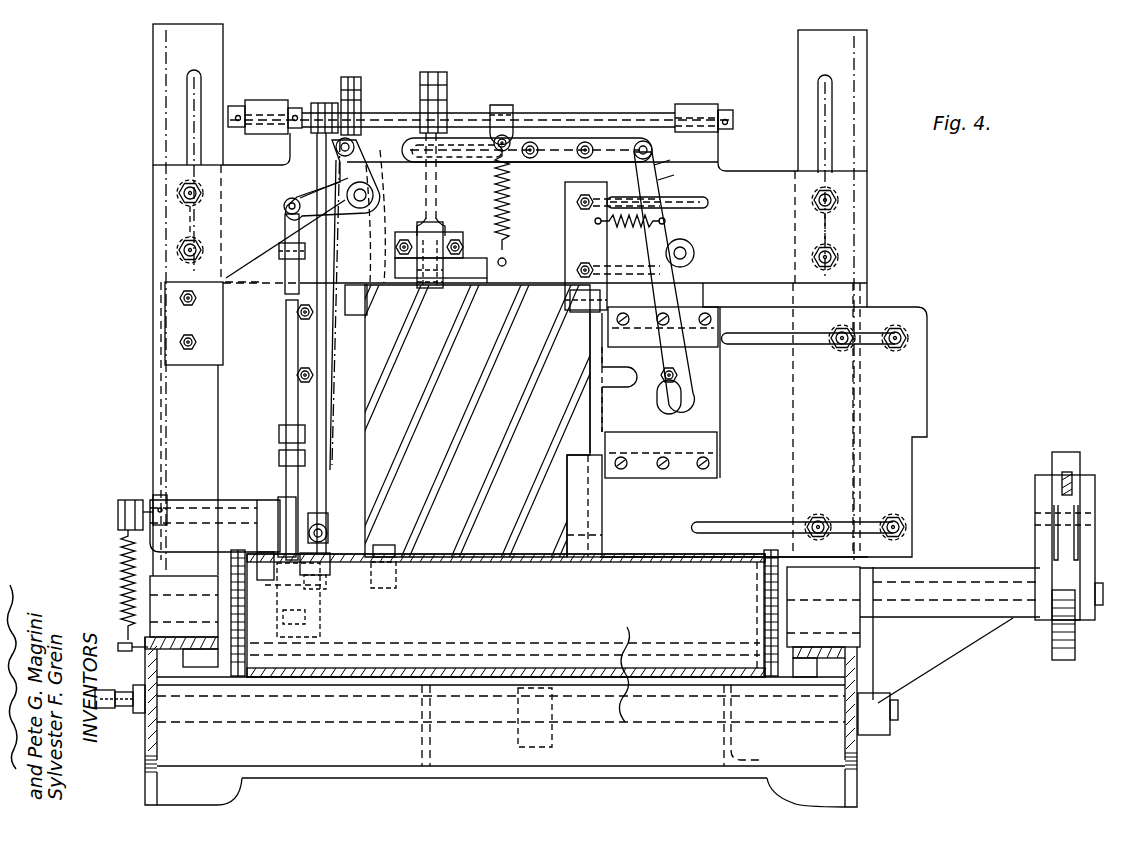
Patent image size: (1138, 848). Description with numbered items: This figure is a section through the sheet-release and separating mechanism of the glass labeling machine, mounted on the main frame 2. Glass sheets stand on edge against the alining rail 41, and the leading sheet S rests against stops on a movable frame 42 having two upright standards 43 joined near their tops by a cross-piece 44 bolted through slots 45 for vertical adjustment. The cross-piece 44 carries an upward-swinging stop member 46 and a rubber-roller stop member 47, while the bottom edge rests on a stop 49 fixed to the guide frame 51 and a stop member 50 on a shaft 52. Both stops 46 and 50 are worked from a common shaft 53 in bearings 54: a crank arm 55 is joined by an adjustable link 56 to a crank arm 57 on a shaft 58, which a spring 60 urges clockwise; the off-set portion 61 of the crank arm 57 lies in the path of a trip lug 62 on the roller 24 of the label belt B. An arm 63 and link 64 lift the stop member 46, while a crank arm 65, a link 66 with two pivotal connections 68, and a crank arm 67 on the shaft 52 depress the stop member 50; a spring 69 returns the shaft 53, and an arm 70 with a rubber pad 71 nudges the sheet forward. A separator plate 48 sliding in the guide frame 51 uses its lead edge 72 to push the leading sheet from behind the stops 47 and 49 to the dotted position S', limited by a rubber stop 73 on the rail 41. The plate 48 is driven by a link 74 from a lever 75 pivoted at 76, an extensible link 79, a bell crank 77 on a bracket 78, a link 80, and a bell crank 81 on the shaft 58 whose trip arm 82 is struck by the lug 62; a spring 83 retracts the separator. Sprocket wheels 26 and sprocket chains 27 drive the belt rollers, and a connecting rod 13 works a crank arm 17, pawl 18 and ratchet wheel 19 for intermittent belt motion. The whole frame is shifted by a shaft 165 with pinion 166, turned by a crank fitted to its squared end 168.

The main frame 2 is at (145, 773).
The connecting rod 13 is at (1062, 485).
The crank arm 17 is at (1042, 533).
The pawl 18 is at (1066, 553).
The ratchet wheel 19 is at (1052, 640).
The roller 24 is at (626, 722).
The sprocket wheels 26 is at (242, 672).
The sprocket chains 27 is at (232, 672).
The alining rail 41 is at (362, 511).
The movable frame 42 is at (494, 648).
The upright standards 43 is at (156, 45).
The cross-piece 44 is at (178, 162).
The slots 45 is at (190, 107).
The stop member 46 is at (433, 290).
The stop member 47 is at (585, 313).
The separator plate 48 is at (618, 394).
The stop 49 is at (576, 525).
The stop member 50 is at (380, 546).
The guide frame 51 is at (905, 385).
The shaft 52 is at (397, 577).
The shaft 53 is at (548, 112).
The bearings 54 is at (260, 104).
The crank arm 55 is at (322, 103).
The link 56 is at (322, 380).
The crank arm 57 is at (324, 508).
The shaft 58 is at (118, 509).
The spring 60 is at (122, 556).
The off-set portion 61 is at (266, 580).
The trip lug 62 is at (233, 542).
The arm 63 is at (448, 90).
The link 64 is at (440, 178).
The crank arm 65 is at (348, 88).
The link 66 is at (287, 221).
The crank arm 67 is at (295, 600).
The pivotal connections 68 is at (315, 143).
The spring 69 is at (509, 203).
The arm 70 is at (385, 208).
The rubber pad 71 is at (357, 313).
The lead edge 72 is at (595, 417).
The rubber stop 73 is at (325, 563).
The link 74 is at (683, 358).
The lever 75 is at (693, 208).
The pivot 76 is at (694, 253).
The bell crank 77 is at (312, 204).
The bracket 78 is at (268, 253).
The extensible link 79 is at (553, 134).
The link 80 is at (290, 340).
The bell crank 81 is at (282, 500).
The trip arm 82 is at (257, 494).
The spring 83 is at (630, 233).
The shaft 165 is at (281, 718).
The pinion 166 is at (518, 738).
The squared crank end 168 is at (125, 710).
The leading sheet S is at (350, 302).
The shifted sheet position S' is at (341, 315).
The label belt B is at (624, 556).